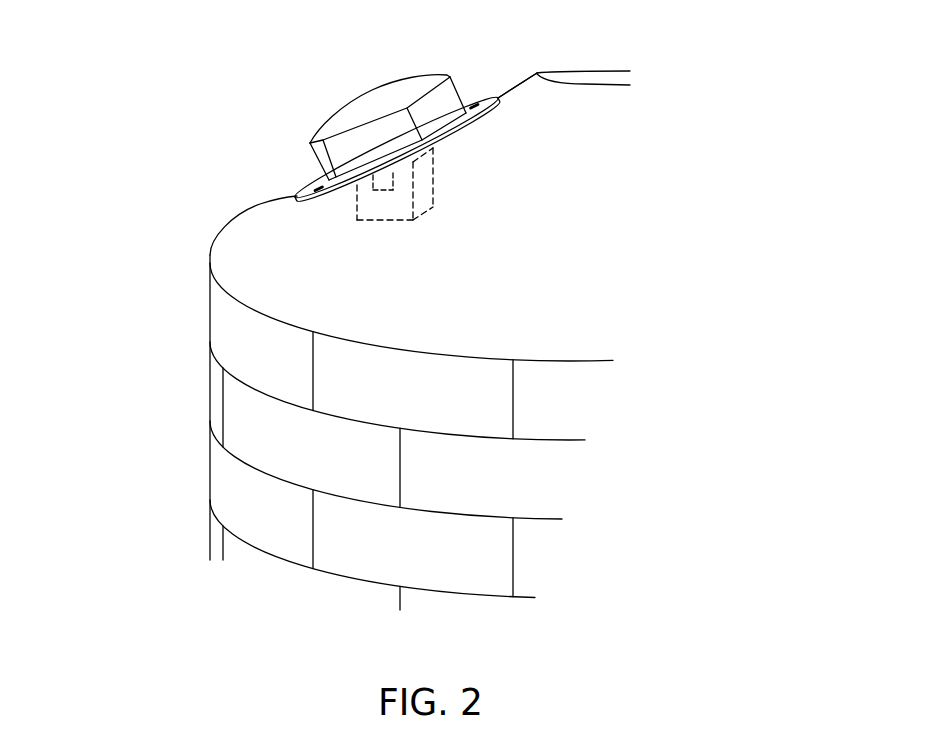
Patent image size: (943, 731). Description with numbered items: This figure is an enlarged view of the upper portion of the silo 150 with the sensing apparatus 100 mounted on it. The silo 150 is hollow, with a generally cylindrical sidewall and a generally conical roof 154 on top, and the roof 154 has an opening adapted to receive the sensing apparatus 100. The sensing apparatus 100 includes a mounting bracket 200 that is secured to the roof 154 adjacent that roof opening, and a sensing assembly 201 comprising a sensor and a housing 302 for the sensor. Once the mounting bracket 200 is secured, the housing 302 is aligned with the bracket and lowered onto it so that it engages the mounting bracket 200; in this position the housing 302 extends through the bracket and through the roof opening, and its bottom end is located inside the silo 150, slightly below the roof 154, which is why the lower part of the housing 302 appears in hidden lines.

The sensing apparatus 100 is at (350, 71).
The silo 150 is at (163, 305).
The roof 154 is at (514, 103).
The mounting bracket 200 is at (292, 169).
The sensing assembly 201 is at (458, 180).
The housing 302 is at (395, 226).